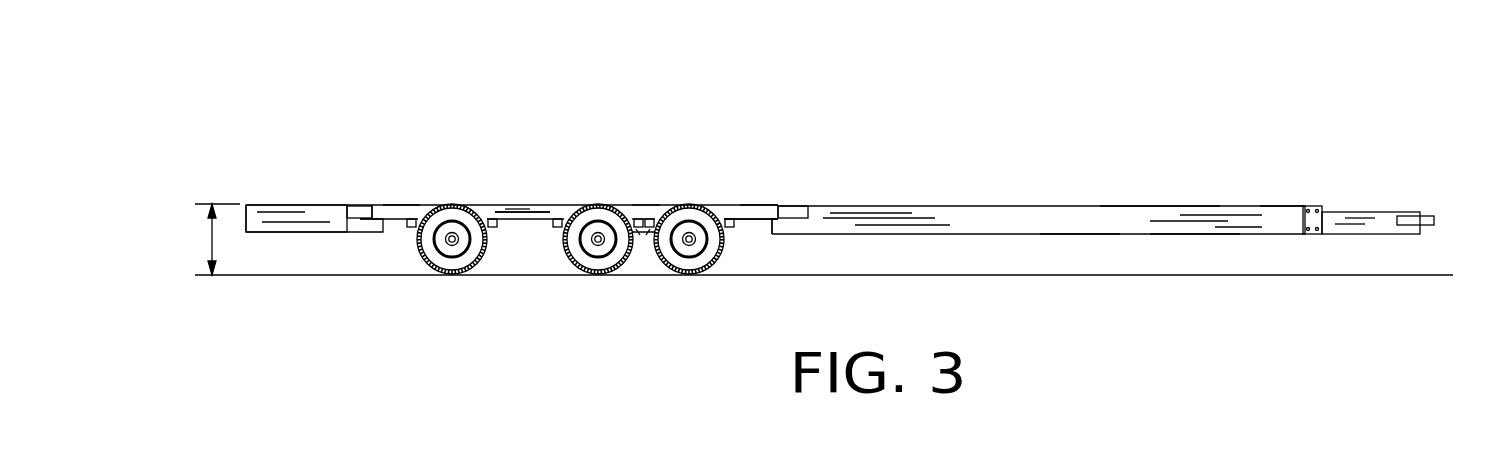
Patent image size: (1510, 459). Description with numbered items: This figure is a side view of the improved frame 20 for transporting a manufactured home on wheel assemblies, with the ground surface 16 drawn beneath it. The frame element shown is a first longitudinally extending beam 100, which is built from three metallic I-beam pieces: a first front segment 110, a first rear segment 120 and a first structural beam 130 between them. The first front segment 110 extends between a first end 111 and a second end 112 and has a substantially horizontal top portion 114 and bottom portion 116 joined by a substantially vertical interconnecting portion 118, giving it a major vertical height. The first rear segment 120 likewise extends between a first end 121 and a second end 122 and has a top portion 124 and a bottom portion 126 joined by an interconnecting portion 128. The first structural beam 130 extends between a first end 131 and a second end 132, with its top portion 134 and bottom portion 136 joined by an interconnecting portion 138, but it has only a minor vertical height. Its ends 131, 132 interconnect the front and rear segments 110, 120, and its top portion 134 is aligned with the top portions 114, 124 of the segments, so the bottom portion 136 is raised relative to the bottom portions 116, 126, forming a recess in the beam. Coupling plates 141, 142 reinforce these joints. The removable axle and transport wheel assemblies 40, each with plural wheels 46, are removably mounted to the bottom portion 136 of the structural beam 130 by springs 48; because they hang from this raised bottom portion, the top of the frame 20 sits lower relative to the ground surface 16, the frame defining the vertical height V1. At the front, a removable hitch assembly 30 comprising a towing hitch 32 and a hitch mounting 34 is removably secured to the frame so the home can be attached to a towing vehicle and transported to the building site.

The first longitudinally extending beam 100 is at (1123, 128).
The frame 20 is at (1243, 123).
The ground surface 16 is at (922, 276).
The removable hitch assembly 30 is at (1377, 211).
The towing hitch 32 is at (1433, 216).
The hitch mounting 34 is at (1312, 231).
The removable axle and transport wheel assembly 40 is at (556, 270).
The wheel 46 is at (450, 274).
The spring 48 is at (407, 228).
The first front segment 110 is at (1047, 205).
The first end of first front segment 111 is at (1289, 205).
The second end of first front segment 112 is at (825, 205).
The top portion of first front segment 114 is at (1161, 205).
The bottom portion of first front segment 116 is at (1188, 222).
The interconnecting portion of first front segment 118 is at (1078, 225).
The first rear segment 120 is at (313, 204).
The first end of first rear segment 121 is at (374, 224).
The second end of first rear segment 122 is at (254, 204).
The top portion of first rear segment 124 is at (343, 204).
The bottom portion of first rear segment 126 is at (291, 235).
The interconnecting portion of first rear segment 128 is at (263, 228).
The first structural beam 130 is at (562, 204).
The first end of first structural beam 131 is at (761, 204).
The second end of first structural beam 132 is at (403, 204).
The top portion of first structural beam 134 is at (652, 204).
The bottom portion of first structural beam 136 is at (750, 222).
The interconnecting portion of first structural beam 138 is at (510, 213).
The coupling plate 141 is at (800, 213).
The coupling plate 142 is at (352, 215).
The vertical height V1 is at (204, 239).